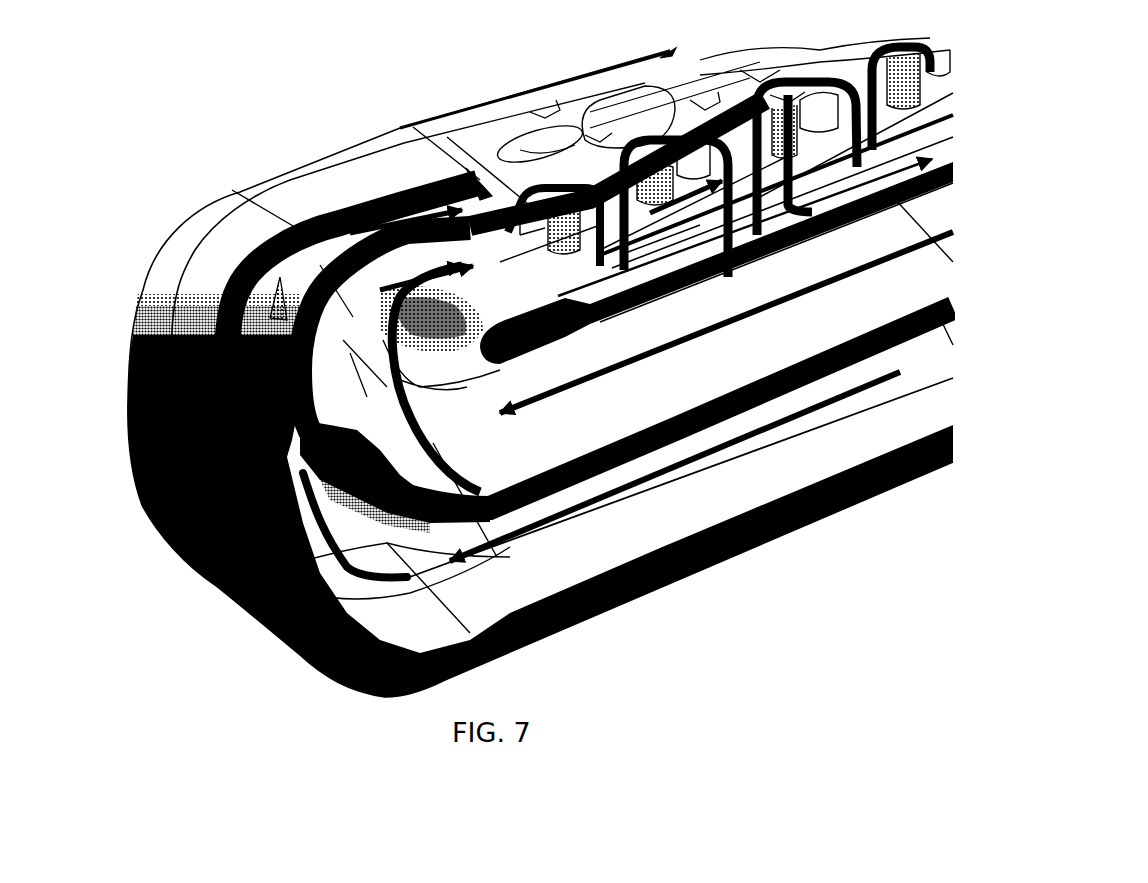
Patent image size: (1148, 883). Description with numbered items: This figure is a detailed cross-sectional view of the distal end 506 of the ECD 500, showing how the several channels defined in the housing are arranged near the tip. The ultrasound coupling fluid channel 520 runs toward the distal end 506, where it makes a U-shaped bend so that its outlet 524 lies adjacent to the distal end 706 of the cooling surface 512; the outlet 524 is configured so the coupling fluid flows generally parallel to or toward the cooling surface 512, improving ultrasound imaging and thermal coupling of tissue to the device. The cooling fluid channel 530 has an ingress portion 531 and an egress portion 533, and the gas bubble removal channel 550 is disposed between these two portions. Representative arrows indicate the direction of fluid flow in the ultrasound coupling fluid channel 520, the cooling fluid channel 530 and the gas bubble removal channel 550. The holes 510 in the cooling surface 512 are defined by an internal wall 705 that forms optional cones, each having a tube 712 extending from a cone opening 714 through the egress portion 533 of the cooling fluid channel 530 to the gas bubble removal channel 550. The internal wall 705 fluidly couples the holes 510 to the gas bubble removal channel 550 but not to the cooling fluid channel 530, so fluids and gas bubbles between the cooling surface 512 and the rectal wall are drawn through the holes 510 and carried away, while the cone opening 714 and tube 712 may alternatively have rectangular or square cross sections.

The ECD 500 is at (97, 106).
The distal end 506 is at (146, 566).
The holes 510 is at (534, 129).
The cooling surface 512 is at (465, 88).
The ultrasound coupling fluid channel 520 is at (590, 380).
The outlet 524 is at (478, 176).
The cooling fluid channel 530 is at (626, 300).
The ingress portion 531 is at (552, 426).
The egress portion 533 is at (574, 255).
The gas bubble removal channel 550 is at (740, 222).
The internal wall 705 is at (621, 165).
The distal end of the cooling surface 706 is at (400, 103).
The tube 712 is at (676, 212).
The cone opening 714 is at (631, 122).